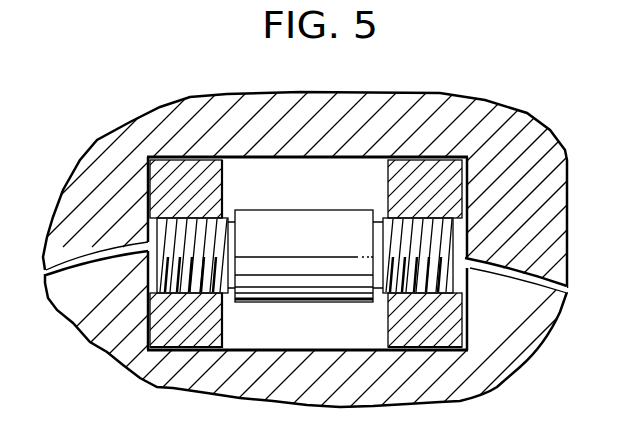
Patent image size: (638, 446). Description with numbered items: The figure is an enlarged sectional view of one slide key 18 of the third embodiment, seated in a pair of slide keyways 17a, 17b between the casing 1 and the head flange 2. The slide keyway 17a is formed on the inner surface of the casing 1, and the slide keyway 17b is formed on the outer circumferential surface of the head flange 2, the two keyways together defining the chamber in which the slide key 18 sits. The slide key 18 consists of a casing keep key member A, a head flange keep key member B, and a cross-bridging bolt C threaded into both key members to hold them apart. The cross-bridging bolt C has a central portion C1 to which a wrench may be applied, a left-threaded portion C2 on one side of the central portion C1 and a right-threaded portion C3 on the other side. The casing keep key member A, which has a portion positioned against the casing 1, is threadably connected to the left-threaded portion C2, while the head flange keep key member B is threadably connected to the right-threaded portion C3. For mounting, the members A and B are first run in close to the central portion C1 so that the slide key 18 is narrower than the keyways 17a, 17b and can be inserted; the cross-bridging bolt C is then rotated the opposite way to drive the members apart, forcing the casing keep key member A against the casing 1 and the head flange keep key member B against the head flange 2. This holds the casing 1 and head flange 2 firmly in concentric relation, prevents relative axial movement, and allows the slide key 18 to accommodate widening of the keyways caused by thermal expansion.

The casing 1 is at (485, 112).
The head flange 2 is at (458, 392).
The slide keyway 17a is at (316, 156).
The slide keyway 17b is at (309, 358).
The slide key 18 is at (358, 190).
The cross-bridging bolt C is at (278, 208).
The central portion C1 is at (333, 221).
The left-threaded portion C2 is at (184, 230).
The right-threaded portion C3 is at (417, 228).
The casing keep key member A is at (213, 328).
The head flange keep key member B is at (390, 328).